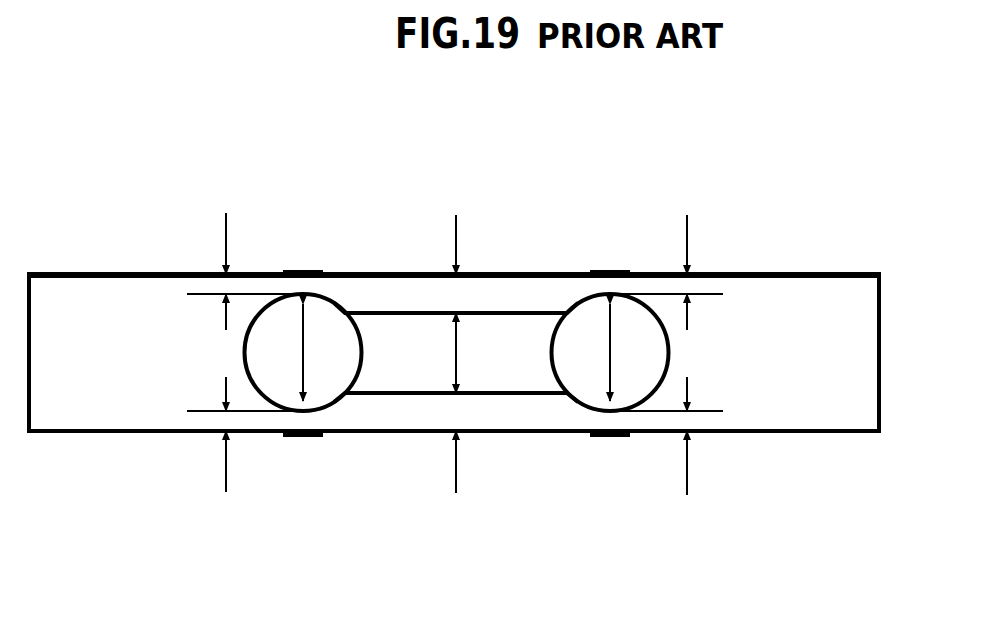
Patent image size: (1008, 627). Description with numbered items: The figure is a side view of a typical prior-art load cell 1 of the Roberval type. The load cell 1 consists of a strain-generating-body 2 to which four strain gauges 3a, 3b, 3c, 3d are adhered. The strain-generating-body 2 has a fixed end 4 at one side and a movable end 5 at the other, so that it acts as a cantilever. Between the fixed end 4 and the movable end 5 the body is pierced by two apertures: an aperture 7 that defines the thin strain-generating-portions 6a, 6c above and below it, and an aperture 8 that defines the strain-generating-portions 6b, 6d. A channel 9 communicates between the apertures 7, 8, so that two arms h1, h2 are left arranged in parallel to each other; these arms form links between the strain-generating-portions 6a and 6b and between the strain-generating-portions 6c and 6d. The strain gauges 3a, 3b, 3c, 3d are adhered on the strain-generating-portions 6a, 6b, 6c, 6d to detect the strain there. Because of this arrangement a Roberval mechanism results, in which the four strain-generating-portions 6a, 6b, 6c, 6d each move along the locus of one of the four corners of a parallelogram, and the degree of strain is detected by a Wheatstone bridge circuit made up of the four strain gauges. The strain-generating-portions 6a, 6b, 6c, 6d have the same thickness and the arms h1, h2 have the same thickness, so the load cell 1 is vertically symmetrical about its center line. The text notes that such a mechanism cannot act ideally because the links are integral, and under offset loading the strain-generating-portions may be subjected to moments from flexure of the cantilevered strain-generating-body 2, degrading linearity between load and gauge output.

The load cell 1 is at (810, 274).
The strain-generating-body 2 is at (105, 298).
The strain gauge 3a is at (300, 270).
The strain gauge 3b is at (607, 270).
The strain gauge 3c is at (300, 438).
The strain gauge 3d is at (605, 438).
The fixed end 4 is at (30, 357).
The movable end 5 is at (880, 362).
The strain-generating-portion 6a is at (202, 277).
The strain-generating-portion 6b is at (715, 275).
The strain-generating-portion 6c is at (225, 422).
The strain-generating-portion 6d is at (690, 421).
The aperture 7 is at (303, 370).
The aperture 8 is at (610, 375).
The channel 9 is at (456, 355).
The arm h1 is at (450, 300).
The arm h2 is at (456, 413).